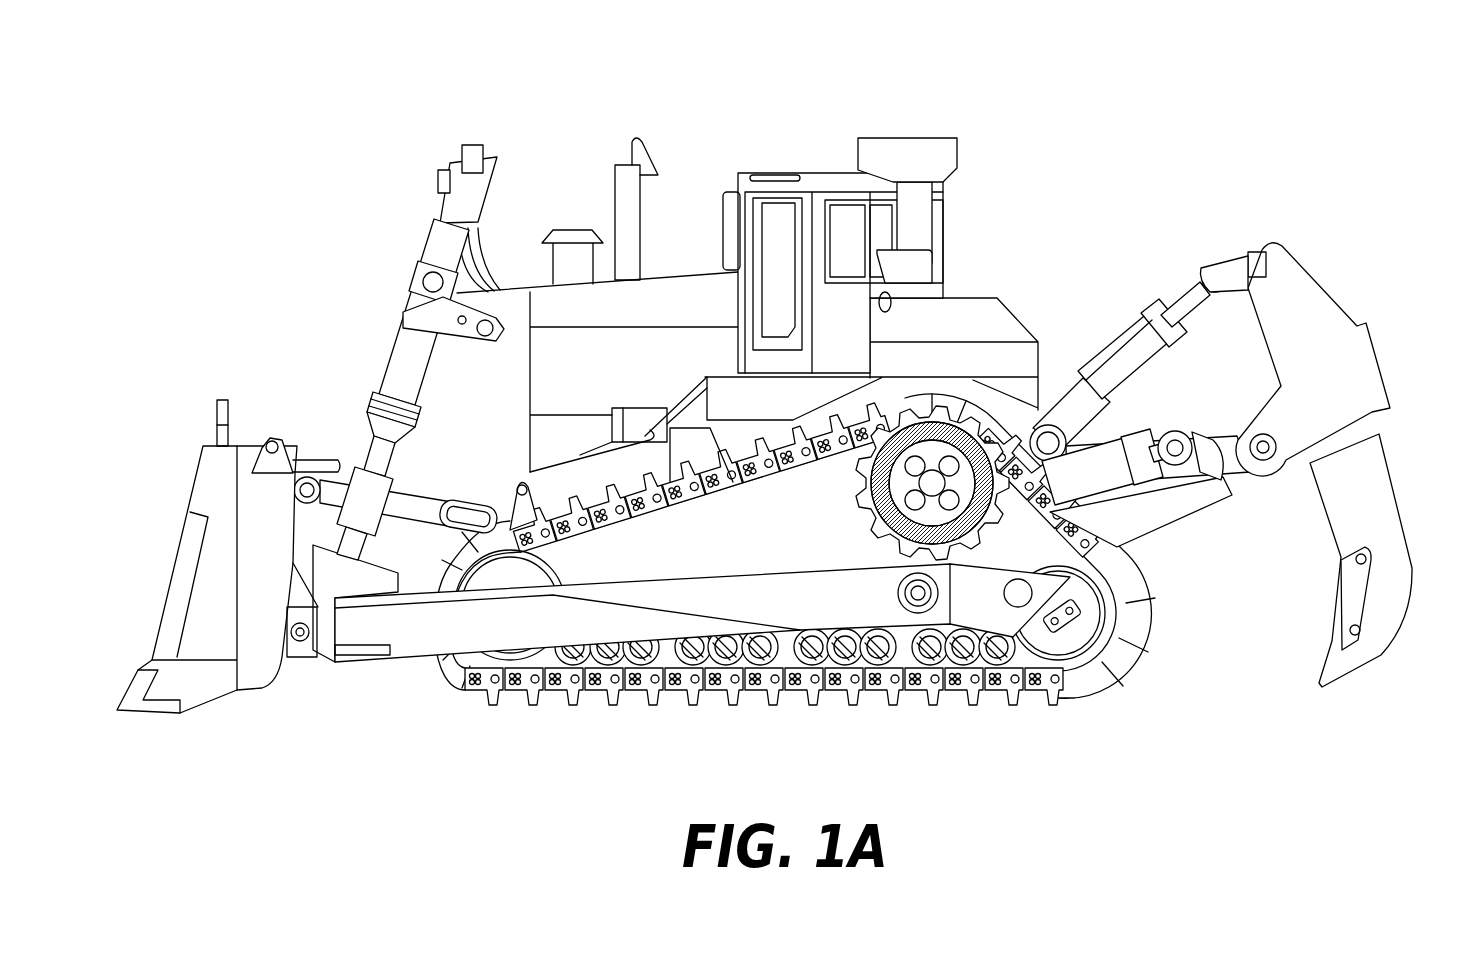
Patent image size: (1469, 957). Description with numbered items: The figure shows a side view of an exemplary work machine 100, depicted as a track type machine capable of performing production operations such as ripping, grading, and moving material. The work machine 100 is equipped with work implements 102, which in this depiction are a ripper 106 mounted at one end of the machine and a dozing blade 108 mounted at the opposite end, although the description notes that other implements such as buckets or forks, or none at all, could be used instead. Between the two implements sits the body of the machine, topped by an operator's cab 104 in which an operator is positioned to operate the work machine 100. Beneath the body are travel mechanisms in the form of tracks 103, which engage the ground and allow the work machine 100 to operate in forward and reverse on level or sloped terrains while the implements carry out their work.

The work machine 100 is at (786, 414).
The work implements 102 is at (786, 429).
The tracks 103 is at (780, 702).
The operator's cab 104 is at (943, 236).
The ripper 106 is at (1398, 494).
The dozing blade 108 is at (180, 537).